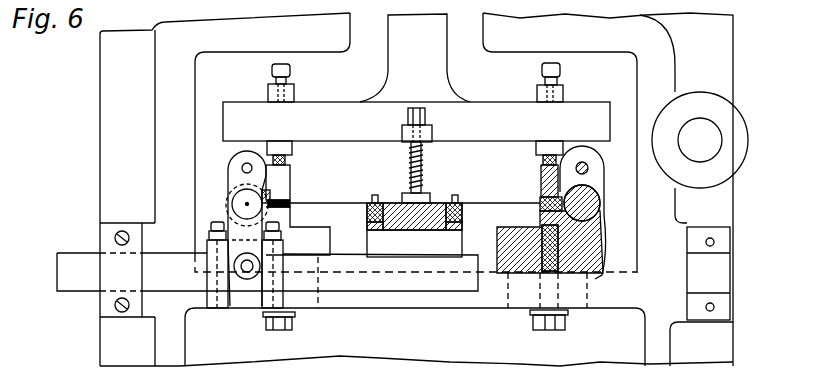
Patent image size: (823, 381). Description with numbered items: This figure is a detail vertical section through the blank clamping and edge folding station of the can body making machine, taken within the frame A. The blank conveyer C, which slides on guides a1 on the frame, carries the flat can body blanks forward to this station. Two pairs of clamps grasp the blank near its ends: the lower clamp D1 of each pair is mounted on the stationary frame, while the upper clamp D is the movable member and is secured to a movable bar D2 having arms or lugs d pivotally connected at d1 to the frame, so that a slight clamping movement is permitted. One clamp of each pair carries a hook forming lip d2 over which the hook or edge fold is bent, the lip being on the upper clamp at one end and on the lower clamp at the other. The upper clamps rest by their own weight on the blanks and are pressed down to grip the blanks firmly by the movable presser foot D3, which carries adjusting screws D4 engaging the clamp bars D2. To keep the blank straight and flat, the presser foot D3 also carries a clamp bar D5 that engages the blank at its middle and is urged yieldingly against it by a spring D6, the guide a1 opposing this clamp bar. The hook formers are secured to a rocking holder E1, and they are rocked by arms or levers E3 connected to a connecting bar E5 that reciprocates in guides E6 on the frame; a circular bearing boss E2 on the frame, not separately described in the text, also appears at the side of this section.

The frame A is at (416, 189).
The guides E6 is at (107, 238).
The connecting bar E5 is at (446, 292).
The rocking holder E1 is at (603, 273).
The bearing boss E2 is at (700, 140).
The arms or levers E3 is at (242, 230).
The presser foot D3 is at (416, 121).
The adjusting screws D4 is at (292, 78).
The movable bar D2 is at (540, 174).
The lower clamp D1 is at (291, 209).
The upper clamp D is at (290, 197).
The clamp bar D5 is at (434, 205).
The spring D6 is at (410, 170).
The blank conveyer C is at (373, 201).
The guides a1 is at (428, 214).
The arms or lugs d is at (265, 158).
The pivot d1 is at (262, 176).
The hook forming lip d2 is at (280, 195).